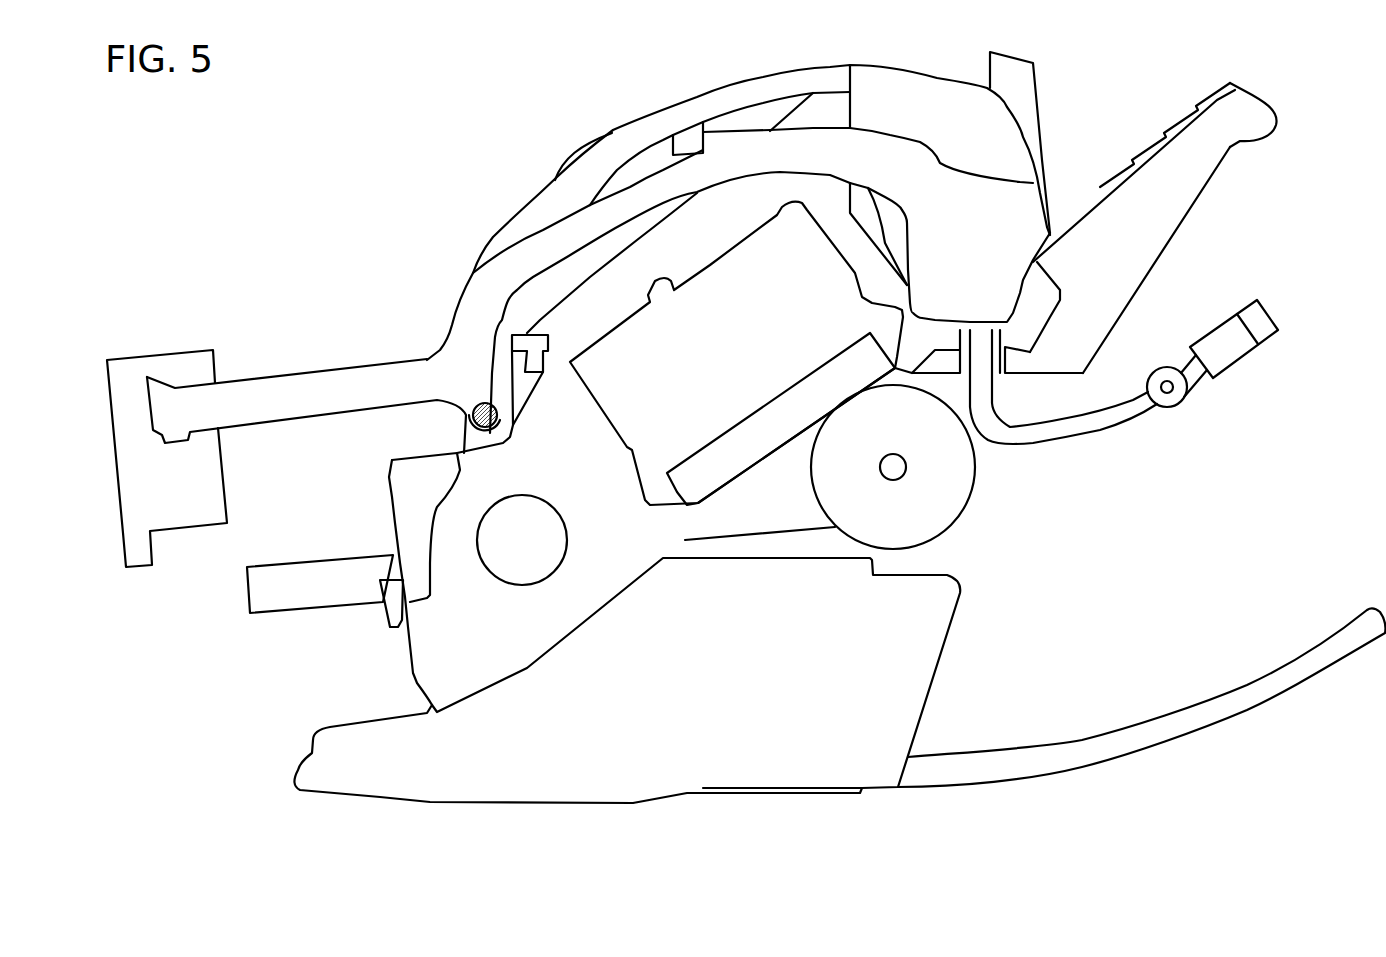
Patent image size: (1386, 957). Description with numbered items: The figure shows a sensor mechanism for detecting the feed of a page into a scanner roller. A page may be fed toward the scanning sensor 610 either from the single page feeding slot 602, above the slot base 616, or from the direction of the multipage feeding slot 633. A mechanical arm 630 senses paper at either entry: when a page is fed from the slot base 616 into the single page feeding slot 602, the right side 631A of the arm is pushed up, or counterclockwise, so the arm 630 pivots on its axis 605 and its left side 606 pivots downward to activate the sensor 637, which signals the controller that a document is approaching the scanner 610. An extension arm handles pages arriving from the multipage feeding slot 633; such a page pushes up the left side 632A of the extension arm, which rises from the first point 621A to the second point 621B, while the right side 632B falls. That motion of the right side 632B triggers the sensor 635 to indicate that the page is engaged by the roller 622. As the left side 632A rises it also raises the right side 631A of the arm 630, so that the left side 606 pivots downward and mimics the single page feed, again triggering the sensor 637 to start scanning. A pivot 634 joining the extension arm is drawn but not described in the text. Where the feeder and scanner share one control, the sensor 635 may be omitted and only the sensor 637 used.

The single page feeding slot 602 is at (1123, 138).
The axis 605 is at (425, 354).
The left side of arm 606 is at (262, 400).
The scanning sensor 610 is at (760, 452).
The slot base 616 is at (1215, 145).
The first point 621A is at (1033, 265).
The second point 621B is at (1025, 378).
The roller 622 is at (960, 503).
The mechanical arm 630 is at (437, 303).
The right side of arm 631A is at (950, 202).
The left side of extension arm 632A is at (1040, 405).
The right side of extension arm 632B is at (1190, 382).
The multipage feeding slot 633 is at (1107, 443).
The pivot joint 634 is at (1177, 397).
The sensor 635 is at (1238, 348).
The sensor 637 is at (137, 345).